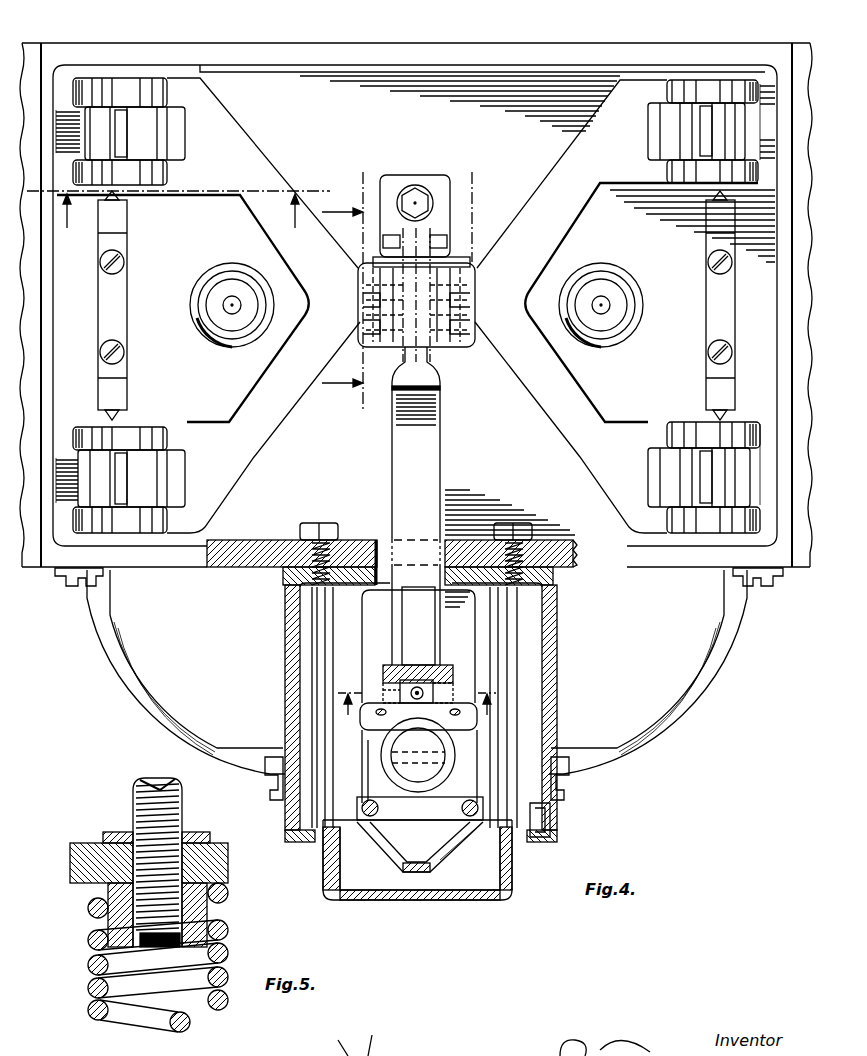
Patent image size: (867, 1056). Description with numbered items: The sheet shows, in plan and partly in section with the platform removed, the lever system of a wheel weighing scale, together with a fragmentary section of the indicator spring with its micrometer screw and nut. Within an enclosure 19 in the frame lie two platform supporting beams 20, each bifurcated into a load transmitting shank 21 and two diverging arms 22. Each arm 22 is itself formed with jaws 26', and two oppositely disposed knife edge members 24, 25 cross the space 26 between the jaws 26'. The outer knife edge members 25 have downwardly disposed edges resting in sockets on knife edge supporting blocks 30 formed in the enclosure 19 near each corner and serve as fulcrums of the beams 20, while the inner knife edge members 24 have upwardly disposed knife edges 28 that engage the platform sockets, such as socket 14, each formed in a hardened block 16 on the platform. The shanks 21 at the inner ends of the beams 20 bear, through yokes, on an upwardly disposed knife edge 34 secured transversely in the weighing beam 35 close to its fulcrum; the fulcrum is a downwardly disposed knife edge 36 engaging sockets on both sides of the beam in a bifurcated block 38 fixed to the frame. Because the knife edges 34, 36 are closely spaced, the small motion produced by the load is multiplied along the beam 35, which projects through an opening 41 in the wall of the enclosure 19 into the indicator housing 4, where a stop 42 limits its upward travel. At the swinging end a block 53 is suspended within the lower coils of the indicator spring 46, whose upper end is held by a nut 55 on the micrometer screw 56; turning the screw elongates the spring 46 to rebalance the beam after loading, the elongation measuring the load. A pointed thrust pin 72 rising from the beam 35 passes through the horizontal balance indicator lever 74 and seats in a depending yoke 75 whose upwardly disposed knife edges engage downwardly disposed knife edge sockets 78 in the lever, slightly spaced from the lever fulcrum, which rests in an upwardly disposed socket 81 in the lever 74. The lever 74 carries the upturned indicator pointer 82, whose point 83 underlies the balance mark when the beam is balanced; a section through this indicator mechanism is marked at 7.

In FIG. 4, the indicator housing 4 is at (285, 642).
In FIG. 4, the section line 7 is at (417, 711).
In FIG. 4, the knife edge engaging socket 14 is at (397, 294).
In FIG. 4, the block 16 is at (178, 221).
In FIG. 4, the enclosure 19 is at (232, 542).
In FIG. 4, the platform supporting beam 20 is at (587, 190).
In FIG. 4, the load transmitting shank 21 is at (360, 287).
In FIG. 4, the diverging arm 22 is at (250, 165).
In FIG. 4, the inner knife edge member 24 is at (165, 128).
In FIG. 4, the outer knife edge member 25 is at (103, 135).
In FIG. 4, the space 26 is at (414, 305).
In FIG. 4, the jaw 26' is at (410, 317).
In FIG. 4, the knife edge 28 is at (160, 123).
In FIG. 4, the knife edge supporting block 30 is at (760, 467).
In FIG. 4, the knife edge 34 is at (477, 297).
In FIG. 4, the weighing beam 35 is at (437, 462).
In FIG. 4, the knife edge 36 is at (458, 250).
In FIG. 4, the bifurcated block 38 is at (449, 224).
In FIG. 4, the opening 41 is at (378, 540).
In FIG. 4, the stop 42 is at (463, 690).
In FIG. 4, the indicator spring 46 is at (418, 772).
In FIG. 5, the indicator spring 46 is at (90, 962).
In FIG. 4, the block 53 is at (397, 712).
In FIG. 5, the nut 55 is at (72, 868).
In FIG. 5, the micrometer screw 56 is at (133, 793).
In FIG. 4, the thrust pin 72 is at (418, 690).
In FIG. 4, the balance indicator lever 74 is at (378, 735).
In FIG. 4, the yoke 75 is at (402, 687).
In FIG. 4, the knife edge socket 78 is at (450, 690).
In FIG. 4, the knife edge socket 81 is at (417, 668).
In FIG. 4, the indicator pointer 82 is at (456, 843).
In FIG. 4, the indicator point 83 is at (427, 868).